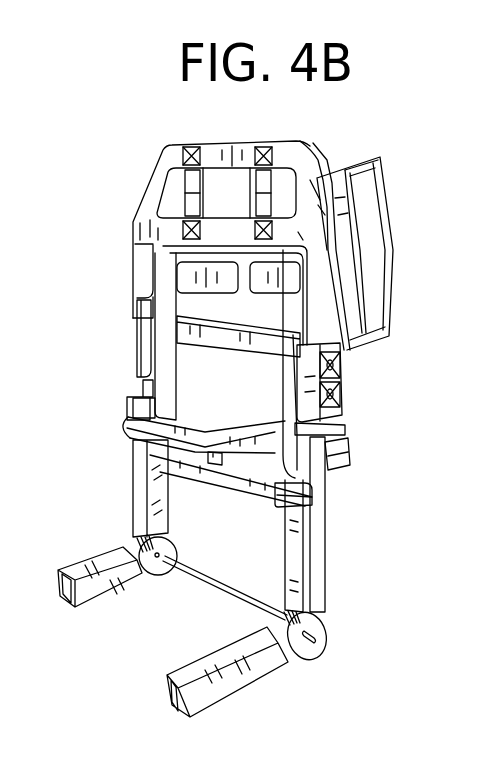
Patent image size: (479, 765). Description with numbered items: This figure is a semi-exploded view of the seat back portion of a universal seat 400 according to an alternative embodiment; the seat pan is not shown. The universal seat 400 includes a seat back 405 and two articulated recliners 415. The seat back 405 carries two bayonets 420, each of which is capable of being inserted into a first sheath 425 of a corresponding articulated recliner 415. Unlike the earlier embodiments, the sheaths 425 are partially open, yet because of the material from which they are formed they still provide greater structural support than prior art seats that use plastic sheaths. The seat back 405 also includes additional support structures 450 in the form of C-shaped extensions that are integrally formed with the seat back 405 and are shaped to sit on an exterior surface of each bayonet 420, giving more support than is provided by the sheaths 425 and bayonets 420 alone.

The universal seat 400 is at (454, 155).
The seat back 405 is at (295, 237).
The articulated recliner 415 is at (156, 572).
The bayonet 420 is at (137, 357).
The first sheath 425 is at (135, 488).
The support structure 450 is at (125, 438).